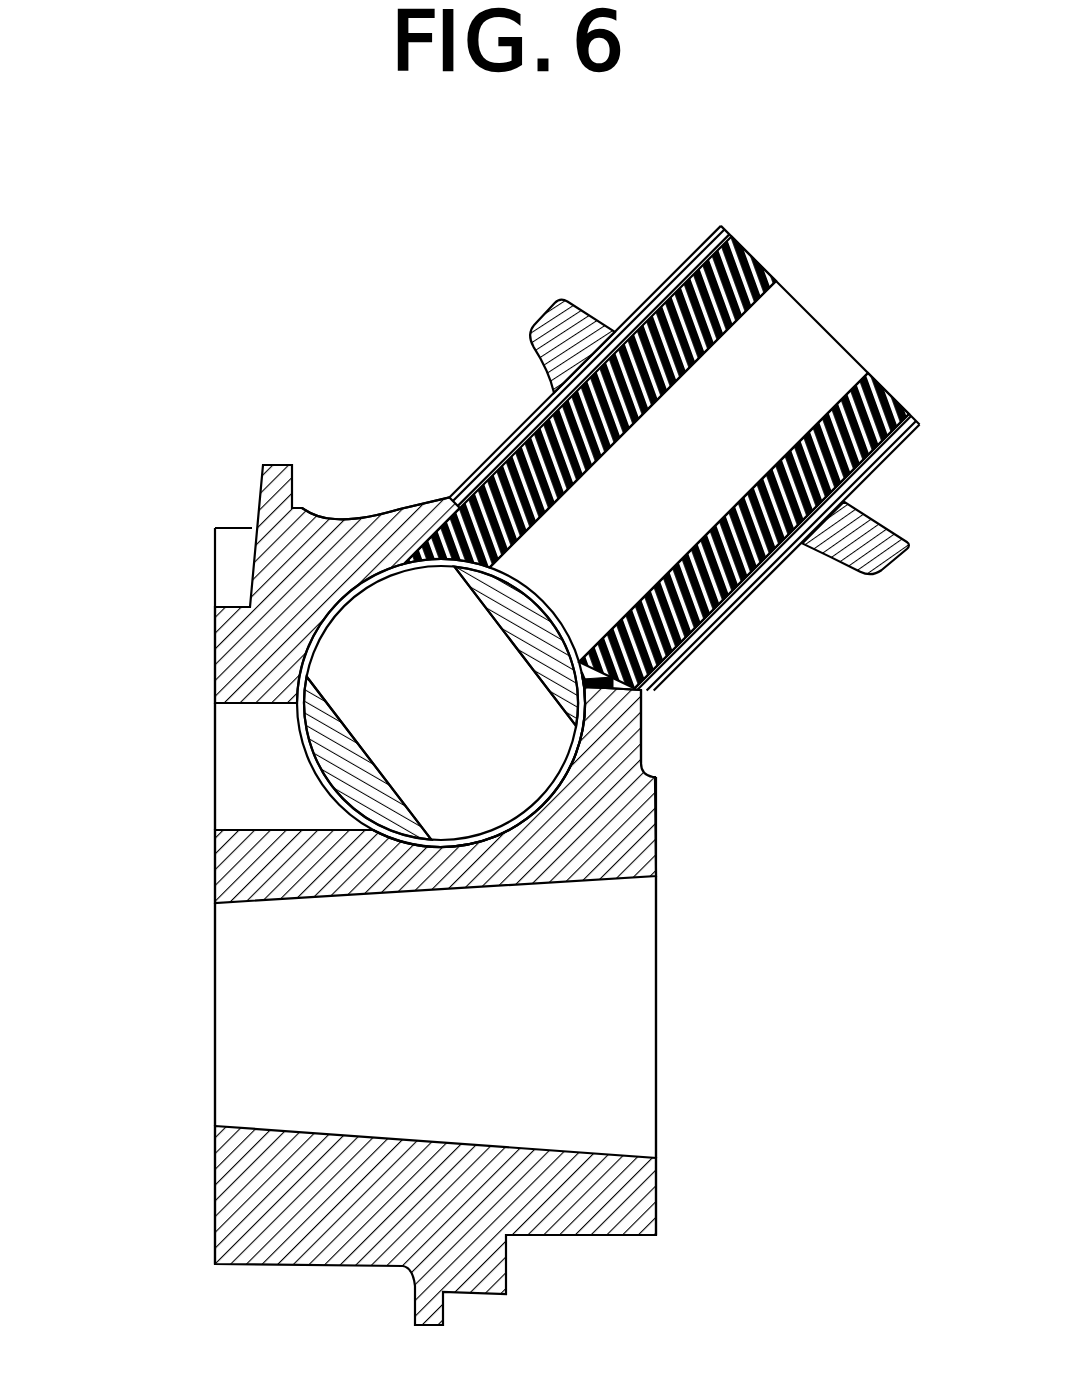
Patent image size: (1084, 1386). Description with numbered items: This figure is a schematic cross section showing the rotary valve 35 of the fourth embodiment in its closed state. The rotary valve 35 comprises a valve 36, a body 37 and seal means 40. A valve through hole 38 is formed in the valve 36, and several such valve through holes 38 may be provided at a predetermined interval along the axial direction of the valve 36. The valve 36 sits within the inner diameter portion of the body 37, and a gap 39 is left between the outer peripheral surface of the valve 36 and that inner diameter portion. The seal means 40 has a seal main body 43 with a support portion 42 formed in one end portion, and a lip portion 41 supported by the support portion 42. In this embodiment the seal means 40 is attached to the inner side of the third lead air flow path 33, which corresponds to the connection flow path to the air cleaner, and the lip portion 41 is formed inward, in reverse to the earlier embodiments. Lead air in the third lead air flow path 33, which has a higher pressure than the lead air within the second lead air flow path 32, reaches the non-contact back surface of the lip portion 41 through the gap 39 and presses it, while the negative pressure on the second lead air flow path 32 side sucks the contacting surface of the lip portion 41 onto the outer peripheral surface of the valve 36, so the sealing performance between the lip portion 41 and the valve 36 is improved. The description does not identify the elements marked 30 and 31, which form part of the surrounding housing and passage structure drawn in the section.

The valve housing 30 is at (318, 537).
The outlet passage 31 is at (317, 1079).
The second lead air flow path 32 is at (247, 742).
The third lead air flow path 33 is at (787, 383).
The rotary valve 35 is at (389, 490).
The valve 36 is at (333, 760).
The body 37 is at (620, 797).
The valve through hole 38 is at (472, 775).
The gap 39 is at (500, 833).
The seal means 40 is at (772, 240).
The lip portion 41 is at (641, 730).
The support portion 42 is at (595, 683).
The seal main body 43 is at (700, 583).